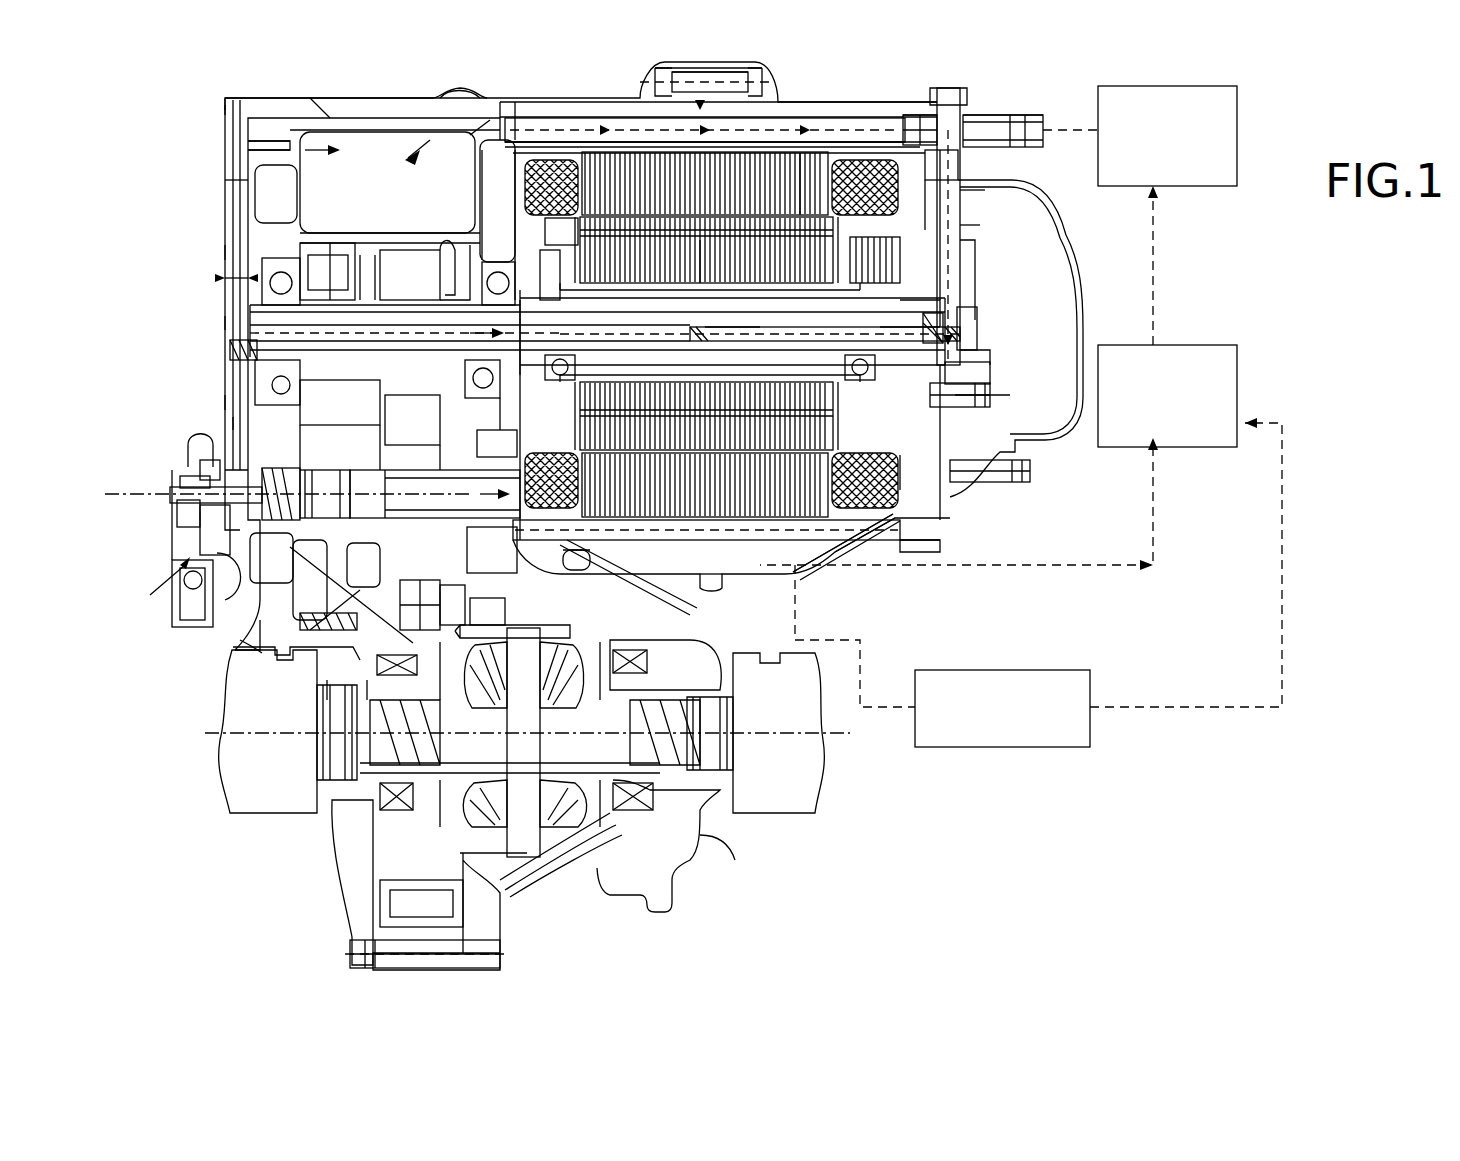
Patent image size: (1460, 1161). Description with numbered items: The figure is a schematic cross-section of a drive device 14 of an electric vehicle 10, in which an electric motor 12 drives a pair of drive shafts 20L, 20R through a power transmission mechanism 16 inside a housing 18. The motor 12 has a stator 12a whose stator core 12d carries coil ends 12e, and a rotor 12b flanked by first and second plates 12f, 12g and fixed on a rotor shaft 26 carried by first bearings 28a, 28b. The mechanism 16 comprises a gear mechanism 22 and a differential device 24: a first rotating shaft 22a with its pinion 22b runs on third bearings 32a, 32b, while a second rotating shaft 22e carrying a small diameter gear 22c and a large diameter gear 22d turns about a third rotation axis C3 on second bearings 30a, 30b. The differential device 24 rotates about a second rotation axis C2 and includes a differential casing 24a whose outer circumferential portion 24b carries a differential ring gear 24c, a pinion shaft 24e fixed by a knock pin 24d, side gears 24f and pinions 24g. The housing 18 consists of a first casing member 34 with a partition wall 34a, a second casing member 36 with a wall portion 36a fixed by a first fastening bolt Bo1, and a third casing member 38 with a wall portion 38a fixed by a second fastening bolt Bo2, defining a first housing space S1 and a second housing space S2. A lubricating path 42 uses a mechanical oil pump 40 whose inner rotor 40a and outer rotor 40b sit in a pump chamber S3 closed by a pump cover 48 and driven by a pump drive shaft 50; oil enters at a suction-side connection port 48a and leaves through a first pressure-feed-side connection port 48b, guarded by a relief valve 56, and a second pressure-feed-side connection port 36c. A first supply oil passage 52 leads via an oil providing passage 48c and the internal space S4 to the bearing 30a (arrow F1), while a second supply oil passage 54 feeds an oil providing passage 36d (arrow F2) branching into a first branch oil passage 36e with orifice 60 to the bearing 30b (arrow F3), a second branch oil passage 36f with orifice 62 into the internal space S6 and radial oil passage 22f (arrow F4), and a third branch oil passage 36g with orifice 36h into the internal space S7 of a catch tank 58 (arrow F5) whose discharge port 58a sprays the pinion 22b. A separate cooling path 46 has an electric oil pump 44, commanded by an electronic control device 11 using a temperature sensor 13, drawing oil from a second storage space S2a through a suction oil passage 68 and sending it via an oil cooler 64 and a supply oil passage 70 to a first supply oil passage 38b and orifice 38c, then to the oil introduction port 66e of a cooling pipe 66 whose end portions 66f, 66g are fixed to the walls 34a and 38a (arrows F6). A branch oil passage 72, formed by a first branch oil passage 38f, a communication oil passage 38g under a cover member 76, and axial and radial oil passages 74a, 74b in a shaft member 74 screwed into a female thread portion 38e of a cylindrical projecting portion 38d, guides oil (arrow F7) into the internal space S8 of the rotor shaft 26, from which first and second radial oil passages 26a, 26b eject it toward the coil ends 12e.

The electric vehicle 10 is at (1265, 85).
The electronic control device 11 is at (1015, 748).
The electric motor 12 is at (925, 515).
The stator 12a is at (984, 192).
The rotor 12b is at (565, 235).
The stator core 12d is at (800, 152).
The coil ends 12e is at (570, 562).
The first plate 12f is at (550, 254).
The second plate 12g is at (866, 252).
The temperature sensor 13 is at (830, 578).
The drive device 14 is at (225, 82).
The power transmission mechanism 16 is at (700, 858).
The housing 18 is at (840, 595).
The drive shaft 20L is at (285, 812).
The drive shaft 20R is at (782, 815).
The gear mechanism 22 is at (263, 625).
The first rotating shaft 22a is at (395, 300).
The pinion 22b is at (327, 271).
The small diameter gear 22c is at (465, 385).
The large diameter gear 22d is at (325, 672).
The second rotating shaft 22e is at (346, 407).
The radial oil passage 22f is at (507, 337).
The differential device 24 is at (632, 642).
The differential casing 24a is at (500, 900).
The outer circumferential portion 24b is at (470, 625).
The differential ring gear 24c is at (355, 930).
The knock pin 24d is at (505, 625).
The pinion shaft 24e is at (530, 857).
The side gears 24f is at (413, 677).
The pinions 24g is at (580, 640).
The rotor shaft 26 is at (985, 365).
The first radial oil passage 26a is at (575, 362).
The second radial oil passage 26b is at (845, 370).
The first bearing 28a is at (925, 505).
The first bearing 28b is at (560, 312).
The second bearing 30a is at (435, 494).
The second bearing 30b is at (325, 560).
The third bearing 32a is at (485, 262).
The third bearing 32b is at (278, 258).
The first casing member 34 is at (530, 92).
The partition wall 34a is at (480, 180).
The second casing member 36 is at (378, 96).
The wall portion 36a is at (210, 188).
The second pressure-feed-side connection port 36c is at (235, 648).
The oil providing passage 36d is at (225, 250).
The first branch oil passage 36e is at (240, 417).
The second branch oil passage 36f is at (225, 320).
The third branch oil passage 36g is at (248, 142).
The orifice 36h is at (248, 151).
The third casing member 38 is at (925, 82).
The wall portion 38a is at (980, 258).
The first supply oil passage 38b is at (965, 122).
The orifice 38c is at (930, 195).
The cylindrical projecting portion 38d is at (900, 300).
The female thread portion 38e is at (960, 315).
The first branch oil passage 38f is at (960, 228).
The communication oil passage 38g is at (992, 345).
The mechanical oil pump 40 is at (195, 445).
The inner rotor 40a is at (180, 520).
The outer rotor 40b is at (185, 482).
The lubricating path 42 is at (225, 660).
The electric oil pump 44 is at (1172, 358).
The cooling path 46 is at (1080, 575).
The pump cover 48 is at (170, 575).
The suction-side connection port 48a is at (200, 465).
The first pressure-feed-side connection port 48b is at (205, 540).
The oil providing passage 48c is at (175, 498).
The pump drive shaft 50 is at (334, 494).
The first supply oil passage 52 is at (228, 576).
The second supply oil passage 54 is at (213, 112).
The relief valve 56 is at (175, 615).
The catch tank 58 is at (385, 190).
The discharge port 58a is at (340, 245).
The orifice 60 is at (288, 491).
The orifice 62 is at (230, 350).
The oil cooler 64 is at (1160, 188).
The cooling pipe 66 is at (755, 112).
The oil introduction port 66e is at (918, 118).
The end portion 66f is at (508, 108).
The end portion 66g is at (865, 125).
The suction oil passage 68 is at (1160, 515).
The supply oil passage 70 is at (1068, 125).
The branch oil passage 72 is at (1000, 390).
The shaft member 74 is at (685, 333).
The axial oil passage 74a is at (820, 325).
The radial oil passage 74b is at (715, 326).
The cover member 76 is at (978, 330).
The first fastening bolt Bo1 is at (348, 952).
The second fastening bolt Bo2 is at (665, 80).
The second rotation axis C2 is at (765, 735).
The third rotation axis C3 is at (125, 492).
The arrow F1 is at (456, 509).
The arrow F2 is at (222, 280).
The arrow F3 is at (282, 398).
The arrow F4 is at (395, 410).
The arrow F5 is at (318, 152).
The arrow F6 is at (666, 91).
The arrow F7 is at (960, 280).
The first housing space S1 is at (320, 105).
The second housing space S2 is at (441, 152).
The second storage space S2a is at (718, 578).
The pump chamber S3 is at (146, 580).
The internal space S4 is at (475, 440).
The internal space S6 is at (371, 277).
The internal space S7 is at (476, 120).
The internal space S8 is at (659, 262).